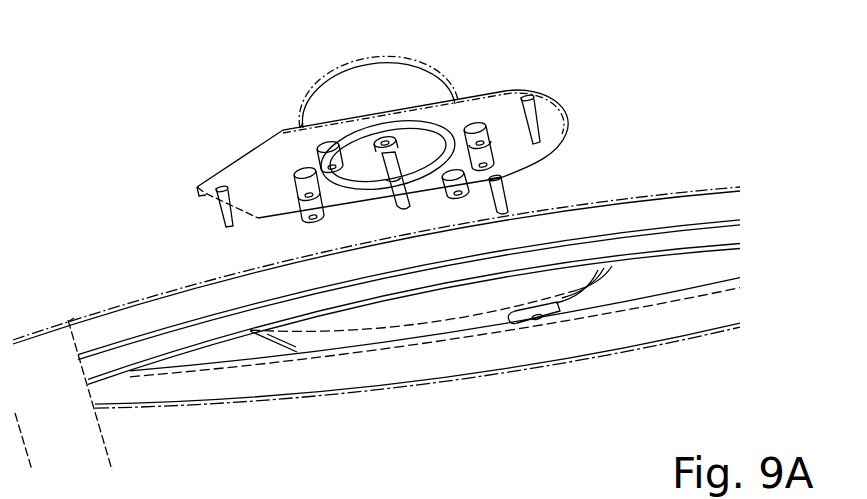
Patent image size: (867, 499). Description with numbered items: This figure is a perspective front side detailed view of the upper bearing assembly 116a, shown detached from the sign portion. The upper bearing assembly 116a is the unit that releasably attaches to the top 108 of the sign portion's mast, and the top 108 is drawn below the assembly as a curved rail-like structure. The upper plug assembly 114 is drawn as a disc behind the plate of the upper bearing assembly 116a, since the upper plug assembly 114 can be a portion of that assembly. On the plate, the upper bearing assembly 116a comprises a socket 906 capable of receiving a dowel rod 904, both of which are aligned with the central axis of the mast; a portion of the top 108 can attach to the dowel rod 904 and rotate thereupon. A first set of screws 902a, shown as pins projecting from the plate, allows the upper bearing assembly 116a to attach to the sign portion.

The top 108 is at (165, 302).
The upper plug assembly 114 is at (347, 96).
The upper bearing assembly 116a is at (560, 105).
The first set of screws 902a is at (510, 200).
The dowel rod 904 is at (396, 168).
The socket 906 is at (392, 128).